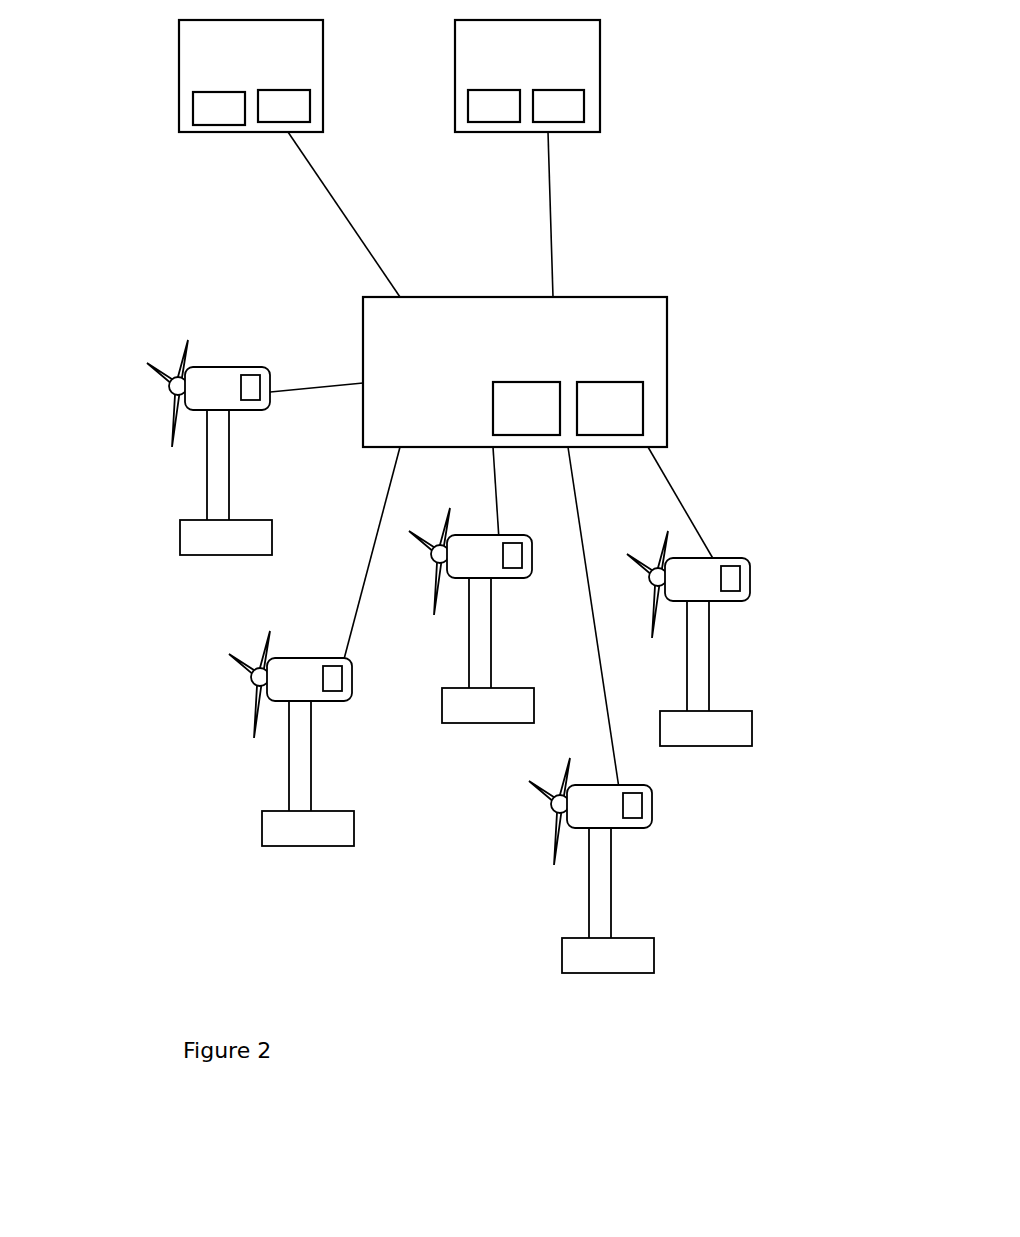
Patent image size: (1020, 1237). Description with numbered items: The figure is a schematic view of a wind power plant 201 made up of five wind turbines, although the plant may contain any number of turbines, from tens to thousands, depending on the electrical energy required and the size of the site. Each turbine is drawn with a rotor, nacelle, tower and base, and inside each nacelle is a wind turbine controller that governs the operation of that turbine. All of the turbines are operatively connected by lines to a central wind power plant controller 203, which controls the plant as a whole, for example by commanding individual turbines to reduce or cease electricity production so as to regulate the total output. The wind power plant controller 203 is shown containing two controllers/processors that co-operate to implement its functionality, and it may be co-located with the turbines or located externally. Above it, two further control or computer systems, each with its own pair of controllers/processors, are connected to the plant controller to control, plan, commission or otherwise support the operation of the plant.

The wind power plant 201 is at (740, 73).
The wind power plant controller 203 is at (515, 372).